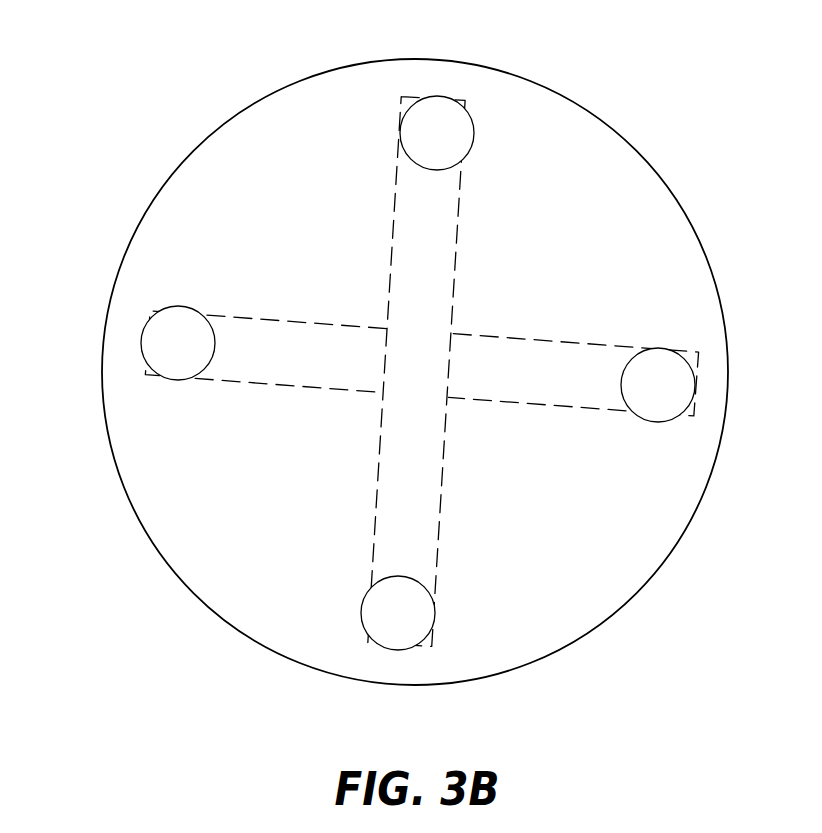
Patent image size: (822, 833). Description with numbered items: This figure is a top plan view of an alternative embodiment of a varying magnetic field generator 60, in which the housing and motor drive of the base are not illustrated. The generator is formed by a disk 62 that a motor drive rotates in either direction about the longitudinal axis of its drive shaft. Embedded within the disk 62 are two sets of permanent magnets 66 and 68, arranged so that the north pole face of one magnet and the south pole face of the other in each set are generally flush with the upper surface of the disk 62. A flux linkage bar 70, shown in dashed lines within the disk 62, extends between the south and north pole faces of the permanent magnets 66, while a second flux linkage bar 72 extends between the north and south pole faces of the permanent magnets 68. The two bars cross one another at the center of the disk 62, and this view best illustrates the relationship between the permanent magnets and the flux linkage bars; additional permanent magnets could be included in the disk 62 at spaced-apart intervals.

The varying magnetic field generator 60 is at (412, 366).
The disk 62 is at (698, 233).
The permanent magnets 66 is at (141, 342).
The permanent magnets 68 is at (448, 118).
The flux linkage bar 70 is at (518, 339).
The flux linkage bar 72 is at (440, 527).